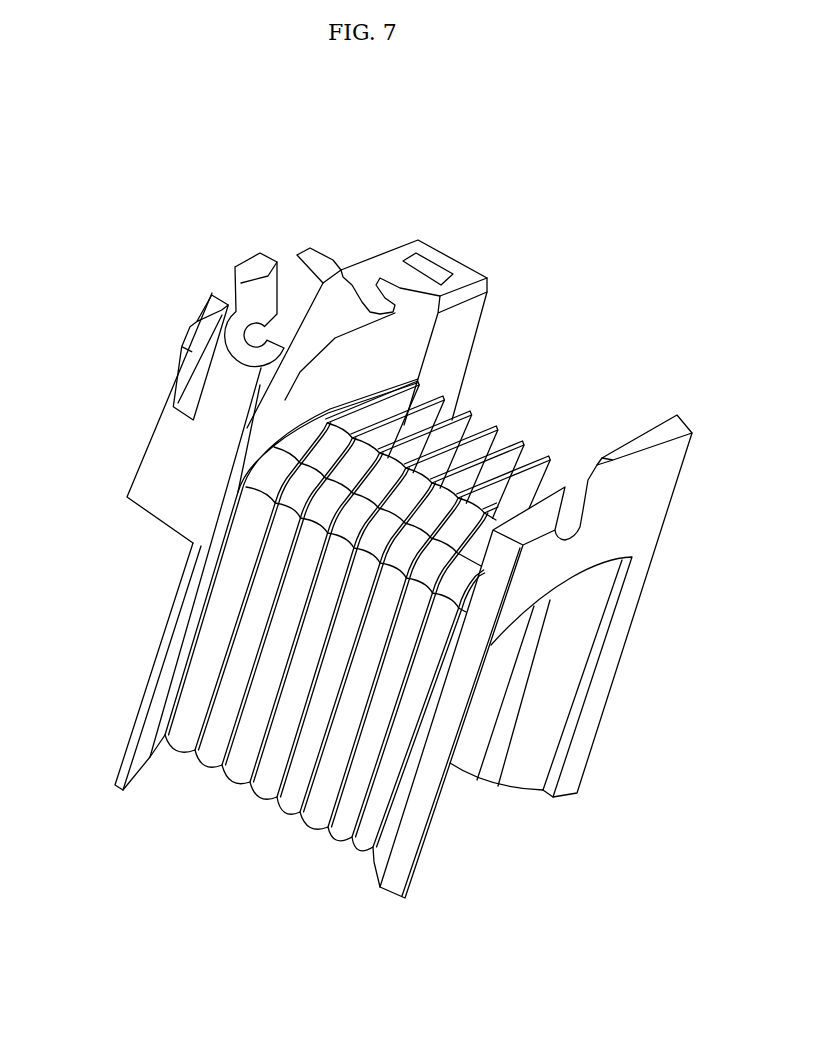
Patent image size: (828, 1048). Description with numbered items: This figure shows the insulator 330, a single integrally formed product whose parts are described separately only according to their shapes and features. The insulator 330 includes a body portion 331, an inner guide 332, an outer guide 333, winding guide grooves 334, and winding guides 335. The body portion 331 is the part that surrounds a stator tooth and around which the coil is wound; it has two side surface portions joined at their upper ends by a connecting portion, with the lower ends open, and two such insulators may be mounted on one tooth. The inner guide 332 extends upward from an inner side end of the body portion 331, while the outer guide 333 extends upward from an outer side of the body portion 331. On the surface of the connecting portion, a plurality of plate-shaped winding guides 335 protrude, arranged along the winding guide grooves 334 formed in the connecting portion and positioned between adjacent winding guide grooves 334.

The insulator 330 is at (93, 122).
The body portion 331 is at (362, 895).
The inner guide 332 is at (667, 460).
The outer guide 333 is at (302, 345).
The winding guide grooves 334 is at (232, 688).
The winding guides 335 is at (537, 462).